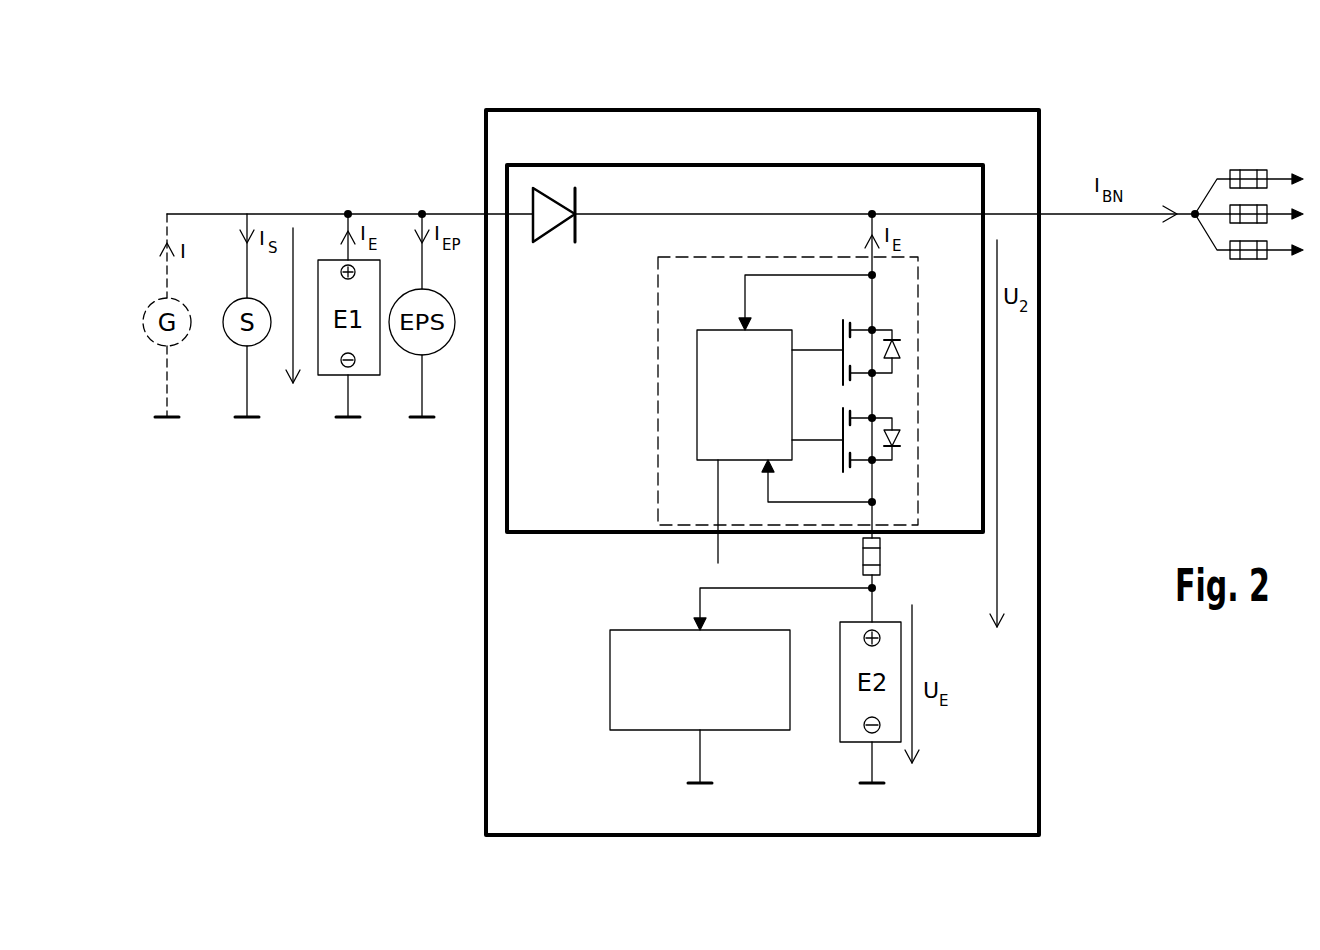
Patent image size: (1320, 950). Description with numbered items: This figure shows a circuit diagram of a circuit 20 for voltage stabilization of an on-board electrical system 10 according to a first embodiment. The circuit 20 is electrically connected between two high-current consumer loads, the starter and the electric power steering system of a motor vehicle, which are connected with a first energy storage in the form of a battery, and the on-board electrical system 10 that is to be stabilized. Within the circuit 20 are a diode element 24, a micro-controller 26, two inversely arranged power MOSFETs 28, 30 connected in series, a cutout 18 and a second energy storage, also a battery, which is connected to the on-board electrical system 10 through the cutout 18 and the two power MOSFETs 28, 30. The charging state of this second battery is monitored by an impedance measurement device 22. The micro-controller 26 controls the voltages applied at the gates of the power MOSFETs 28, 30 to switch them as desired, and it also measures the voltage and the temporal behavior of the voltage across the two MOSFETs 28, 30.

The on-board electrical system 10 is at (1233, 162).
The cutout 18 is at (880, 553).
The circuit 20 is at (876, 104).
The impedance measurement device 22 is at (620, 687).
The diode element 24 is at (558, 203).
The micro-controller 26 is at (698, 397).
The power MOSFET 28 is at (912, 353).
The power MOSFET 30 is at (912, 439).